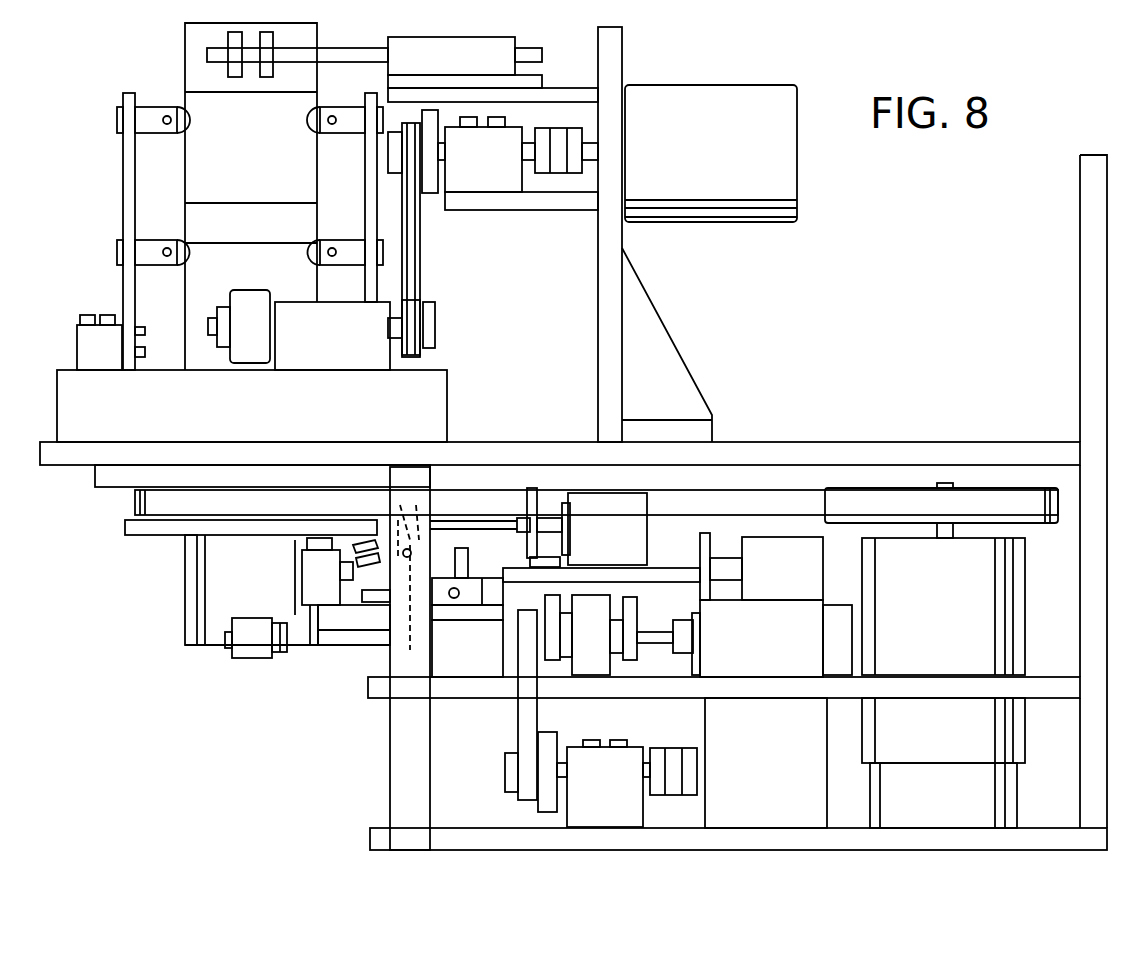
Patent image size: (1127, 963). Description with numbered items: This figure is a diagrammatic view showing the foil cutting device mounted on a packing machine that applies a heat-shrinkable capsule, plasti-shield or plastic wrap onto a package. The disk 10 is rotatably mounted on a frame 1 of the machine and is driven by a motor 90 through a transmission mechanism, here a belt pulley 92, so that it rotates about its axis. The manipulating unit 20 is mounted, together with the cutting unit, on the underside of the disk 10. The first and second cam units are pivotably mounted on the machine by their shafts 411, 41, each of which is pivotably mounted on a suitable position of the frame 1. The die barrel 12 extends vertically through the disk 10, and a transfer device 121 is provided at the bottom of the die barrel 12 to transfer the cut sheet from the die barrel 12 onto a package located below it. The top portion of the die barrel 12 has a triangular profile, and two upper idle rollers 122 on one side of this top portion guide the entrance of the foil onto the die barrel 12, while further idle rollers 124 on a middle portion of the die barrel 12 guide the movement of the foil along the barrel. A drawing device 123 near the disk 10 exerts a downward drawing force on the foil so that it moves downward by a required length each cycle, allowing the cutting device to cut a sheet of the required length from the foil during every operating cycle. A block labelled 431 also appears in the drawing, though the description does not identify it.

The frame 1 is at (560, 440).
The disk 10 is at (155, 535).
The die barrel 12 is at (185, 618).
The manipulating unit 20 is at (302, 567).
The shaft 41 is at (456, 600).
The motor 90 is at (1025, 612).
The belt pulley 92 is at (791, 490).
The transfer device 121 is at (255, 658).
The upper idle rollers 122 is at (275, 31).
The drawing device 123 is at (262, 365).
The idle rollers 124 is at (165, 105).
The shaft 411 is at (395, 625).
The slide block 431 is at (365, 570).